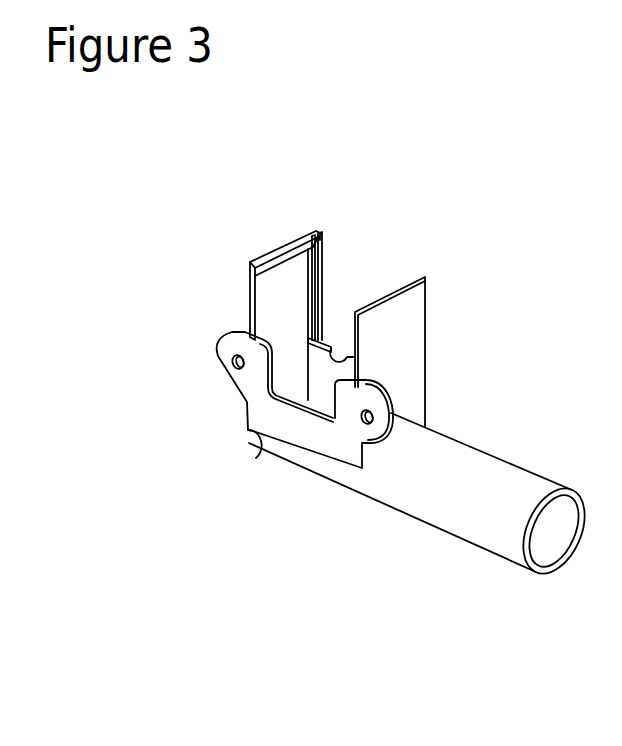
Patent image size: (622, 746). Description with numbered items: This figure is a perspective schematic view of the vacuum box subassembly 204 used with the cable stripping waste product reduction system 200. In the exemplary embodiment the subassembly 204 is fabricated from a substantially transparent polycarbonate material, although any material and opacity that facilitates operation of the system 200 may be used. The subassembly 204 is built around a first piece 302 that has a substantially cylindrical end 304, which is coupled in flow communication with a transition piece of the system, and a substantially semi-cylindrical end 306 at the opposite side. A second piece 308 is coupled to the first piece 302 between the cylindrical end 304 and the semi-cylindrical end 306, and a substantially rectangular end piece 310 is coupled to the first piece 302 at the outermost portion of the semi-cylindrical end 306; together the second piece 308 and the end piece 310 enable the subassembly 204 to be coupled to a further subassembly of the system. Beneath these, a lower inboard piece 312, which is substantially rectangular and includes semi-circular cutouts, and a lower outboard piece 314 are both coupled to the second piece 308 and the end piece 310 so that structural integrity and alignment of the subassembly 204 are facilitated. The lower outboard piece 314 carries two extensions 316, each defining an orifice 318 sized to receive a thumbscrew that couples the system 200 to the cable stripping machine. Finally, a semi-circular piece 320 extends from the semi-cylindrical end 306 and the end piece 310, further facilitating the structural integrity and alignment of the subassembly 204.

The cable stripping waste product reduction system 200 is at (387, 188).
The vacuum box subassembly 204 is at (251, 198).
The first piece 302 is at (458, 594).
The substantially cylindrical end 304 is at (487, 453).
The substantially semi-cylindrical end 306 is at (297, 472).
The second piece 308 is at (405, 313).
The substantially rectangular end piece 310 is at (266, 257).
The lower inboard piece 312 is at (324, 342).
The lower outboard piece 314 is at (262, 441).
The extensions 316 is at (226, 341).
The orifice 318 is at (222, 368).
The semi-circular piece 320 is at (257, 440).